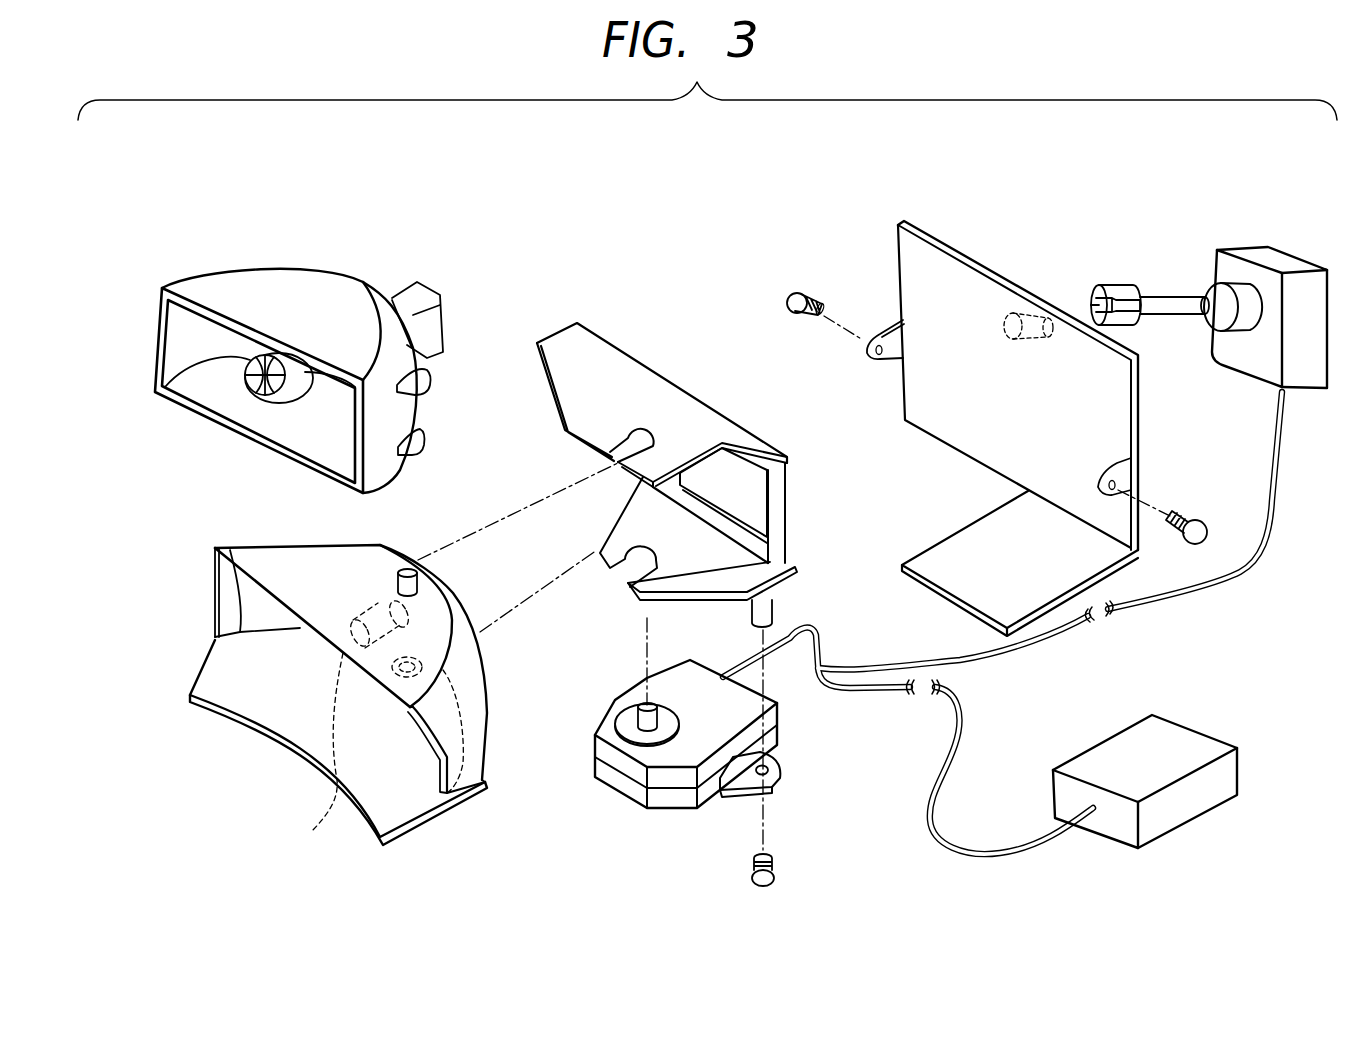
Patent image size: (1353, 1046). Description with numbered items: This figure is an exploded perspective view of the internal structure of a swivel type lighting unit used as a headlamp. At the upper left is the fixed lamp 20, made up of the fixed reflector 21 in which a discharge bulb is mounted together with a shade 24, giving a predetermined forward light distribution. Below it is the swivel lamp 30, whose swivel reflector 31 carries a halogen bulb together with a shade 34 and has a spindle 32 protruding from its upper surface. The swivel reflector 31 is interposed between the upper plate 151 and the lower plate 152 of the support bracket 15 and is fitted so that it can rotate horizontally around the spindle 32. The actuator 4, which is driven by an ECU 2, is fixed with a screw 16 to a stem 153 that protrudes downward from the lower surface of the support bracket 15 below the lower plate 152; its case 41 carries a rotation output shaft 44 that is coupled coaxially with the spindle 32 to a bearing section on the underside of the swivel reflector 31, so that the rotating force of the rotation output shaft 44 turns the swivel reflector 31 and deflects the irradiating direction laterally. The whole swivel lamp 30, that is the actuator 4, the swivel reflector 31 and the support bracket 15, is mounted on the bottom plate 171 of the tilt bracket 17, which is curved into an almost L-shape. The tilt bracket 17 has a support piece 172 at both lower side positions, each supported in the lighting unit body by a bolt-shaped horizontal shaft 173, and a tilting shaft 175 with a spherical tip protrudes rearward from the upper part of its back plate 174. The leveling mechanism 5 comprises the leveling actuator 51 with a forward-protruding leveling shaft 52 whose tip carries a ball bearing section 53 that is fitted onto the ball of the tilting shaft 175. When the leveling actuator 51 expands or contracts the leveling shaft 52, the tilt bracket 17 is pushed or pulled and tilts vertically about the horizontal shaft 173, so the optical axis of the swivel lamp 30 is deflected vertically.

The ECU 2 is at (1127, 742).
The actuator 4 is at (705, 769).
The leveling mechanism 5 is at (1210, 266).
The support bracket 15 is at (632, 452).
The screw 16 is at (777, 877).
The tilt bracket 17 is at (1001, 390).
The fixed lamp 20 is at (270, 340).
The fixed reflector 21 is at (305, 278).
The shade 24 is at (262, 388).
The swivel lamp 30 is at (322, 664).
The swivel reflector 31 is at (283, 558).
The spindle 32 is at (410, 570).
The shade 34 is at (310, 753).
The case 41 is at (670, 800).
The rotation output shaft 44 is at (633, 727).
The leveling actuator 51 is at (1297, 260).
The leveling shaft 52 is at (1173, 313).
The ball bearing section 53 is at (1142, 283).
The upper plate 151 is at (573, 395).
The lower plate 152 is at (623, 533).
The stem 153 is at (757, 610).
The bottom plate 171 is at (967, 577).
The support piece 172 is at (887, 323).
The horizontal shaft 173 is at (793, 313).
The back plate 174 is at (990, 295).
The tilting shaft 175 is at (1056, 310).